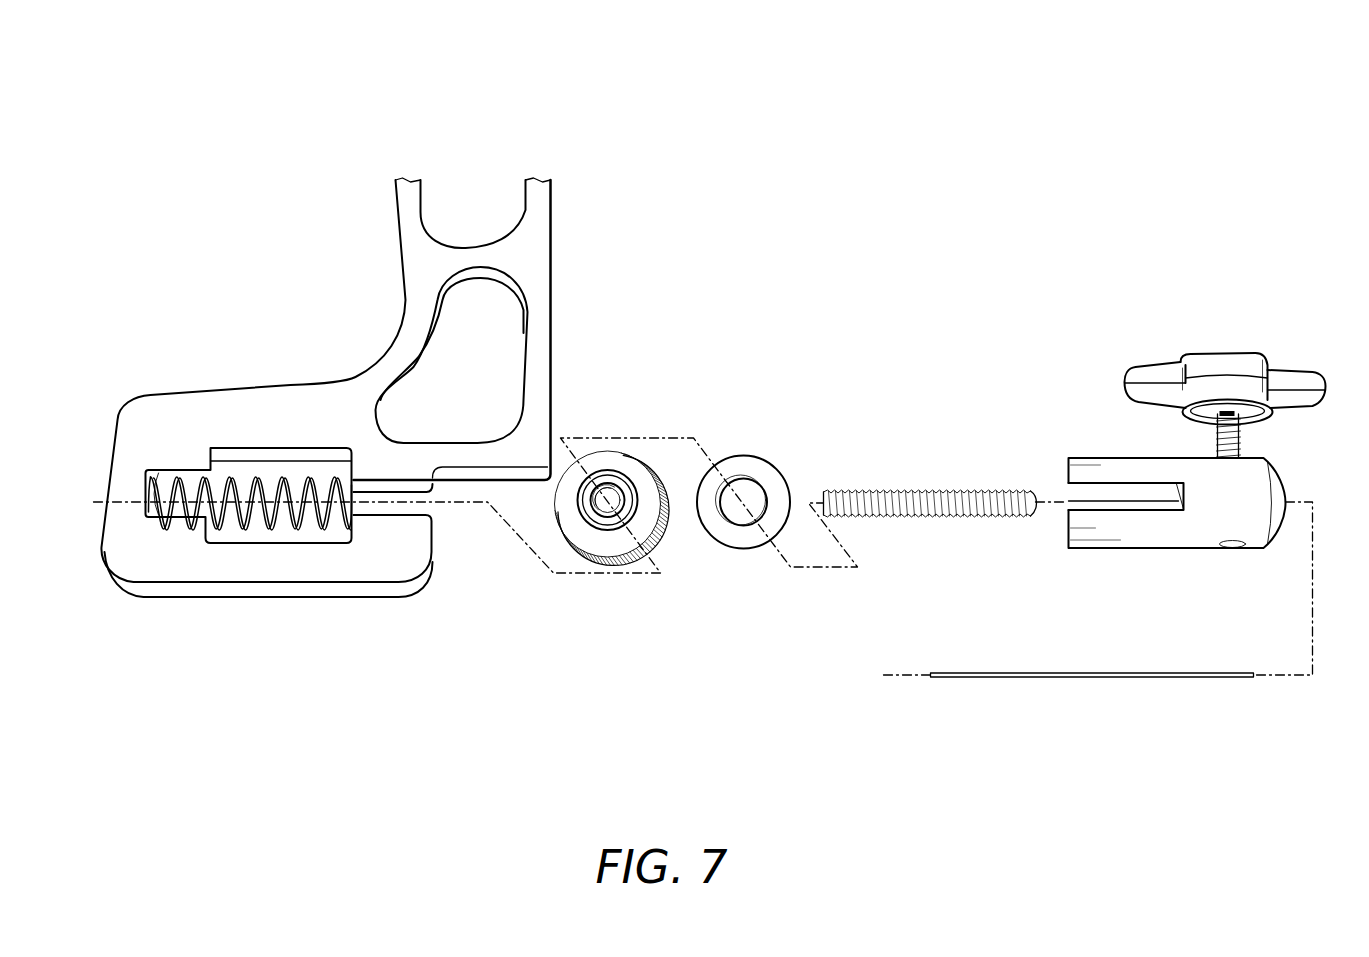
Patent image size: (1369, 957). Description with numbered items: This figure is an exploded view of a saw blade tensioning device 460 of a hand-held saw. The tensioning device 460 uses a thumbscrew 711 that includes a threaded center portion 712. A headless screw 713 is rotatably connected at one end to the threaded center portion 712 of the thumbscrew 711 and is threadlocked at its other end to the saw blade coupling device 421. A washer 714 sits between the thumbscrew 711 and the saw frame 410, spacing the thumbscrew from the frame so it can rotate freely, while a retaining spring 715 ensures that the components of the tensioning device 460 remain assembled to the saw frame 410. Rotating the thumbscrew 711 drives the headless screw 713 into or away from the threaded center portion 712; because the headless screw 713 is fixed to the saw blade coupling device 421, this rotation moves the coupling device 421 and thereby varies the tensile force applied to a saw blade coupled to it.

The saw frame 410 is at (402, 283).
The saw blade coupling device 421 is at (1132, 473).
The tensioning device 460 is at (1150, 227).
The thumbscrew 711 is at (612, 513).
The threaded center portion 712 is at (607, 503).
The headless screw 713 is at (928, 517).
The washer 714 is at (762, 457).
The retaining spring 715 is at (267, 528).